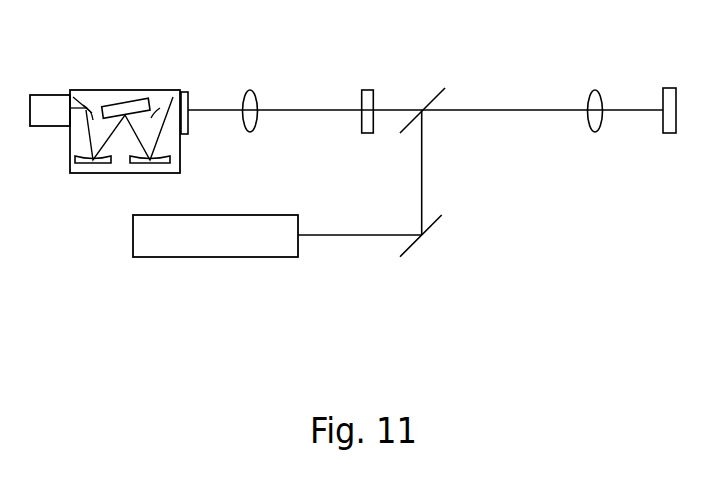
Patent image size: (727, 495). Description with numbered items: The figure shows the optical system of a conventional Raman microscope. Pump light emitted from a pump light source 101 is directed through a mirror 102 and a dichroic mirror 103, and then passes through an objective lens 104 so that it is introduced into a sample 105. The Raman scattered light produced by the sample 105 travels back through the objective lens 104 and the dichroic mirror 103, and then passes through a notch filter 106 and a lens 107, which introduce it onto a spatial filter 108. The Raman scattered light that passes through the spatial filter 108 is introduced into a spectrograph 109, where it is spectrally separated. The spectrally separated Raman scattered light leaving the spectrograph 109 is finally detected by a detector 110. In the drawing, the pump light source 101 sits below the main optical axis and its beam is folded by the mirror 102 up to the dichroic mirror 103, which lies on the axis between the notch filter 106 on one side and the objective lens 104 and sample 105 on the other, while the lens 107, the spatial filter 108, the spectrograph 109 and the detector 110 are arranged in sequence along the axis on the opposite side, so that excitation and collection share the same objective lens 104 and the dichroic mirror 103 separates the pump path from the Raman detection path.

The pump light source 101 is at (217, 257).
The mirror 102 is at (430, 228).
The dichroic mirror 103 is at (433, 92).
The objective lens 104 is at (597, 90).
The sample 105 is at (670, 88).
The notch filter 106 is at (370, 90).
The lens 107 is at (252, 90).
The spatial filter 108 is at (185, 92).
The spectrograph 109 is at (128, 90).
The detector 110 is at (47, 94).